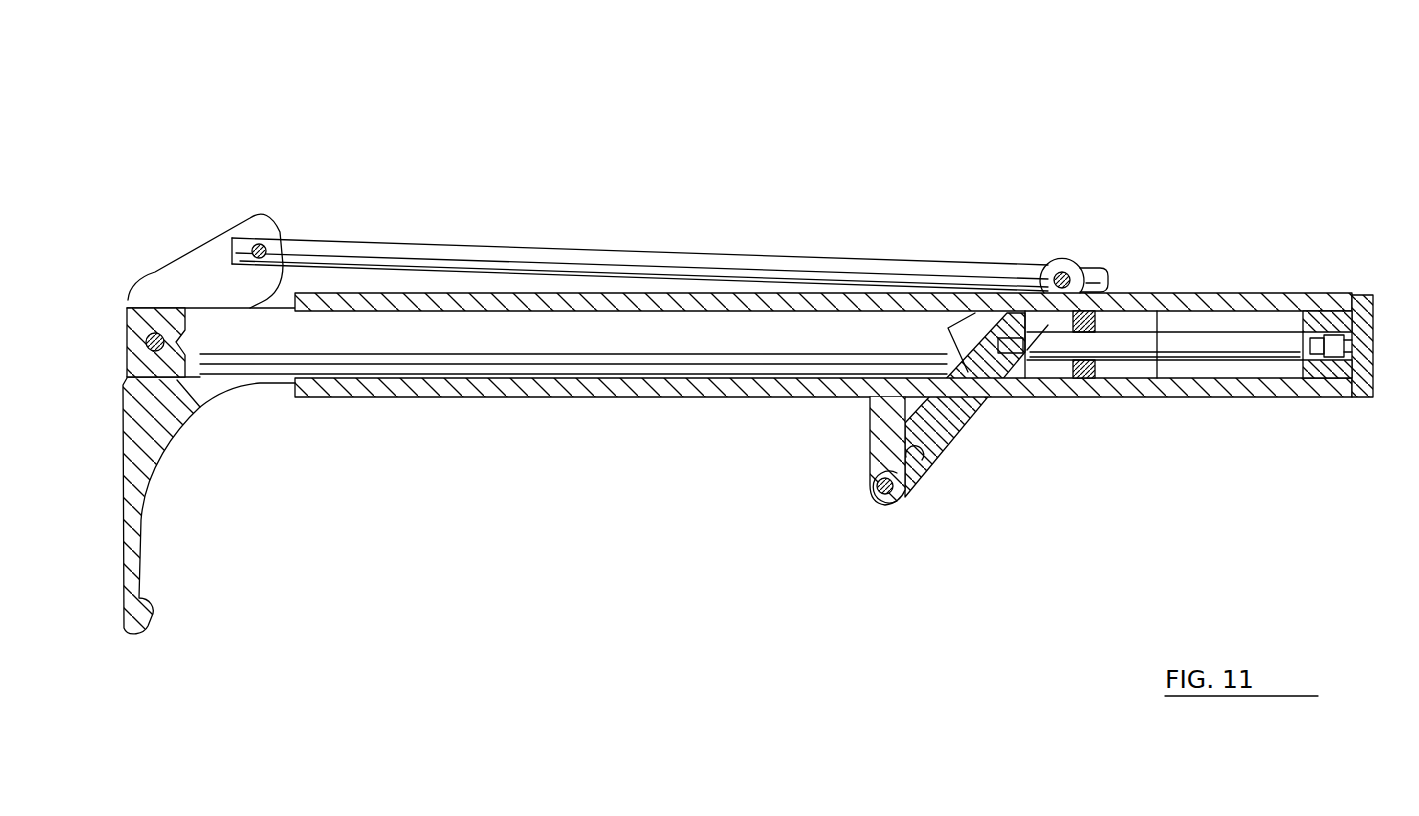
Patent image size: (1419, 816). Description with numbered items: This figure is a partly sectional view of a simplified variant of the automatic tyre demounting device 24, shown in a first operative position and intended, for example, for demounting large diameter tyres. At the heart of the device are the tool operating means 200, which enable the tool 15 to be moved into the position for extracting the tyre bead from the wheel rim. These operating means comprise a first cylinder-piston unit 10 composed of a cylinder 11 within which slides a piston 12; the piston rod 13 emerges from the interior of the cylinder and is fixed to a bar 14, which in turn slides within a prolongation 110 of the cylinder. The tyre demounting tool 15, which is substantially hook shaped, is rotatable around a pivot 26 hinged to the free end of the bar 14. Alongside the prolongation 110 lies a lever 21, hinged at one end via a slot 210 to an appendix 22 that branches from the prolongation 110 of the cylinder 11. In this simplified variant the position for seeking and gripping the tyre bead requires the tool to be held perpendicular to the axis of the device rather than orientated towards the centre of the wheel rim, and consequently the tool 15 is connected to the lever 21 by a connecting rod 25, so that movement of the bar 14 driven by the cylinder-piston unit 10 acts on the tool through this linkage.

The first cylinder-piston unit 10 is at (1199, 440).
The cylinder 11 is at (1234, 292).
The piston 12 is at (1332, 376).
The piston rod 13 is at (1250, 362).
The bar 14 is at (672, 335).
The tool 15 is at (137, 557).
The lever 21 is at (948, 424).
The appendix 22 is at (886, 505).
The automatic tyre demounting device 24 is at (719, 113).
The connecting rod 25 is at (521, 253).
The pivot 26 is at (147, 342).
The prolongation of the cylinder 110 is at (405, 397).
The tool operating means 200 is at (808, 479).
The slot 210 is at (930, 457).